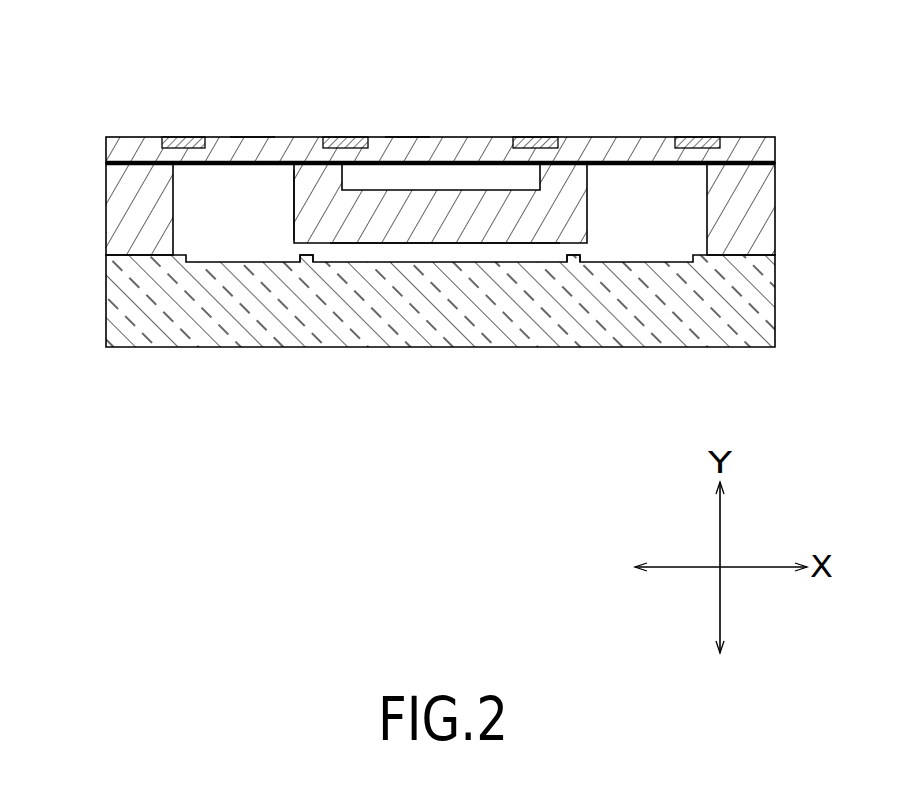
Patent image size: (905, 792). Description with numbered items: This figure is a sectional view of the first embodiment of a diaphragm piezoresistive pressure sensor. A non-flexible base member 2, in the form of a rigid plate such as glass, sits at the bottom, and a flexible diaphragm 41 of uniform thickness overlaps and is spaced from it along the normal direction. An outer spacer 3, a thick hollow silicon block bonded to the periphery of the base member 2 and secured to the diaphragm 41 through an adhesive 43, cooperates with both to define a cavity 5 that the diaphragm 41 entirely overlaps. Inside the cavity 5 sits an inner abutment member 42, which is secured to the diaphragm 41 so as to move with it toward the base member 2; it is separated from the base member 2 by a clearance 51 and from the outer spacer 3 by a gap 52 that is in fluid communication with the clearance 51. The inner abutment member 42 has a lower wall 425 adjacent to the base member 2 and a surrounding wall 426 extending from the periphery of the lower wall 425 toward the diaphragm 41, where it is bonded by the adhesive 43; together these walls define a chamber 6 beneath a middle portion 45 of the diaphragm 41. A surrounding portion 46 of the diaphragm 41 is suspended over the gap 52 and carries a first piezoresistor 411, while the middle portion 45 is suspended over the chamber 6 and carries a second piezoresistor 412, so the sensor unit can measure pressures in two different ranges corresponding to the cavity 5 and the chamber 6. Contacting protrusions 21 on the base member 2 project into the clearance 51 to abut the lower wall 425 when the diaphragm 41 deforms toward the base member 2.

The base member 2 is at (670, 333).
The contacting protrusions 21 is at (307, 263).
The outer spacer 3 is at (120, 203).
The diaphragm 41 is at (620, 137).
The first piezoresistor 411 is at (183, 137).
The second piezoresistor 412 is at (347, 137).
The inner abutment member 42 is at (588, 208).
The lower wall 425 is at (417, 235).
The surrounding wall 426 is at (294, 185).
The adhesive 43 is at (300, 162).
The middle portion 45 is at (404, 137).
The surrounding portion 46 is at (250, 137).
The cavity 5 is at (202, 220).
The clearance 51 is at (477, 252).
The gap 52 is at (245, 213).
The chamber 6 is at (463, 177).